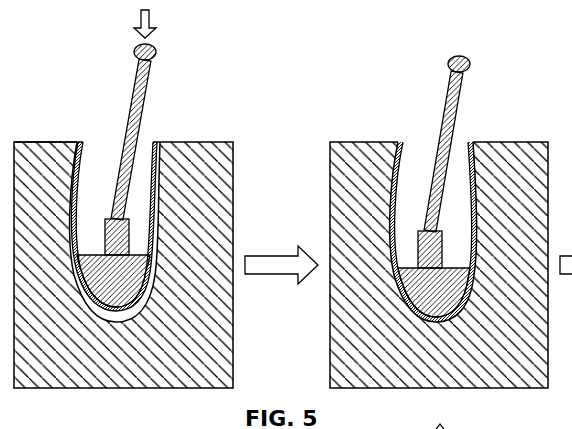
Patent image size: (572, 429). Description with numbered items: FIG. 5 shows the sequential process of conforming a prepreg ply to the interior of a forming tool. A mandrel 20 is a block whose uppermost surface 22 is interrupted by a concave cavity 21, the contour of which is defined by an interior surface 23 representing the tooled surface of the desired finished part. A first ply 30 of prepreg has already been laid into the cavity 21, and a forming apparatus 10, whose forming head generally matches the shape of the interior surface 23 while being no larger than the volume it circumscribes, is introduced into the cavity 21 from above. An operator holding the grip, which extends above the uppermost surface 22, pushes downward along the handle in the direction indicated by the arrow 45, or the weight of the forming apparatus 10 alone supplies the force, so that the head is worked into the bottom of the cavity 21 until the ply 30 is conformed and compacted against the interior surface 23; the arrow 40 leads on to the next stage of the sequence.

The forming apparatus 10 is at (141, 118).
The mandrel 20 is at (218, 163).
The cavity 21 is at (105, 163).
The uppermost surface 22 is at (50, 142).
The interior surface 23 is at (102, 317).
The first ply 30 is at (80, 168).
The pressing direction arrow 45 is at (152, 20).
The arrow (partially visible) 40 is at (477, 425).